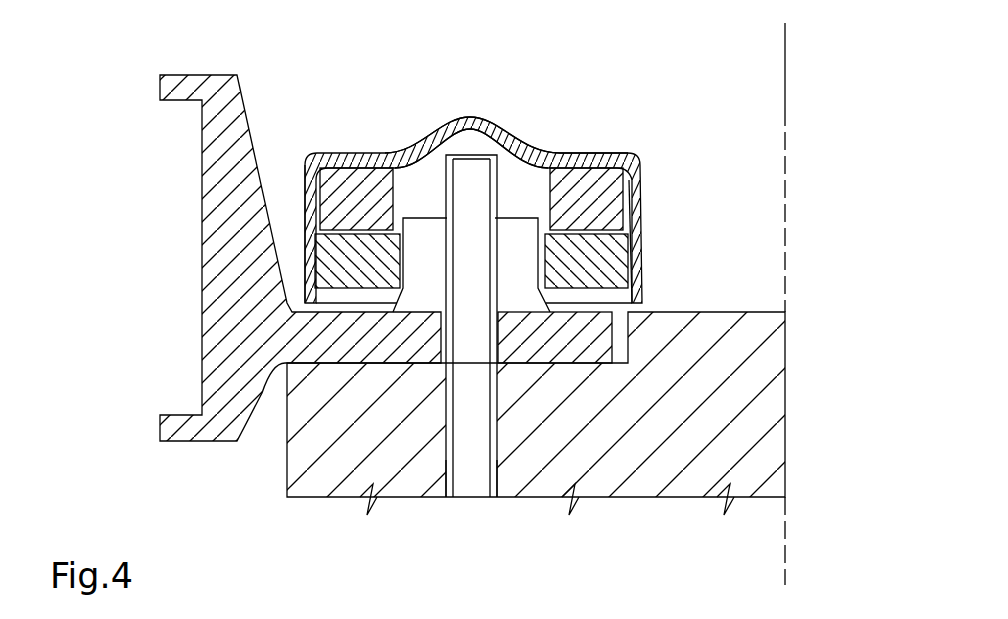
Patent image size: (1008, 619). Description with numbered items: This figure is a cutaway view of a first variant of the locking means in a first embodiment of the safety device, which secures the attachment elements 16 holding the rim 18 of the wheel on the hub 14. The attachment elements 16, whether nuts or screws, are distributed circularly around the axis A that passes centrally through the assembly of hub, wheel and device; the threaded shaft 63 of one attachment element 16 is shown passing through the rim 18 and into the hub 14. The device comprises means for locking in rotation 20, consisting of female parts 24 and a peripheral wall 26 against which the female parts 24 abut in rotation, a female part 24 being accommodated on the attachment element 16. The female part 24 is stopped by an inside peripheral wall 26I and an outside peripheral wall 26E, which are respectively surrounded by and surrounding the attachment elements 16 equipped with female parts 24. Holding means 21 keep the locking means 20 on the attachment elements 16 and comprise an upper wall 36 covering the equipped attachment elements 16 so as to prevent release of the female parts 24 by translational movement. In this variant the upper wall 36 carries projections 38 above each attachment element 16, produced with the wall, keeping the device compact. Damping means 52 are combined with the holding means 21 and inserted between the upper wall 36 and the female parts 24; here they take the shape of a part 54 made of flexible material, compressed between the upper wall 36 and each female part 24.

The hub 14 is at (415, 480).
The attachment elements 16 is at (521, 205).
The rim 18 is at (220, 407).
The means for locking in rotation 20 is at (290, 273).
The holding means 21 is at (423, 167).
The female parts 24 is at (603, 254).
The peripheral wall 26 is at (655, 202).
The outside peripheral wall 26E is at (307, 213).
The inside peripheral wall 26I is at (632, 228).
The upper wall 36 is at (586, 145).
The projections 38 is at (456, 104).
The damping means 52 is at (605, 188).
The part made of flexible material 54 is at (343, 190).
The threaded shaft 63 is at (478, 480).
The axis A is at (787, 103).